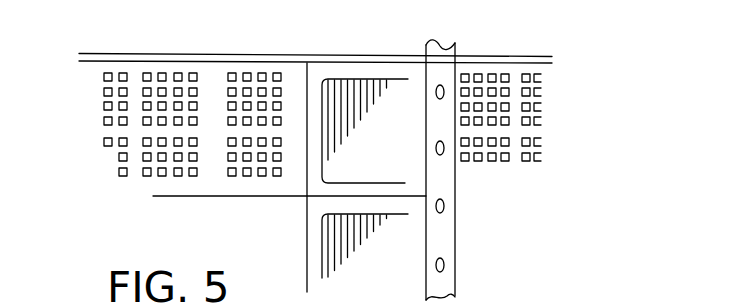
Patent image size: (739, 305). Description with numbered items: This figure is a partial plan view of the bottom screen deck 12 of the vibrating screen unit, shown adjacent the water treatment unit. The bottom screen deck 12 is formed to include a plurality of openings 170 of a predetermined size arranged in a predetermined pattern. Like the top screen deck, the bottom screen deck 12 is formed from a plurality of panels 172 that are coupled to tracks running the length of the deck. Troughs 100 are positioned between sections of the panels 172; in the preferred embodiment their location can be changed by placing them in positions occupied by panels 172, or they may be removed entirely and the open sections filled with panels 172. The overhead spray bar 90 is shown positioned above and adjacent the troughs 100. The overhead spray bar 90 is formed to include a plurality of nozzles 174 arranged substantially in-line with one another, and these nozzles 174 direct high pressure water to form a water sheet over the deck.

The bottom screen deck 12 is at (136, 50).
The openings 170 is at (279, 75).
The panels 172 is at (236, 72).
The troughs 100 is at (392, 105).
The overhead spray bar 90 is at (456, 53).
The nozzles 174 is at (444, 86).